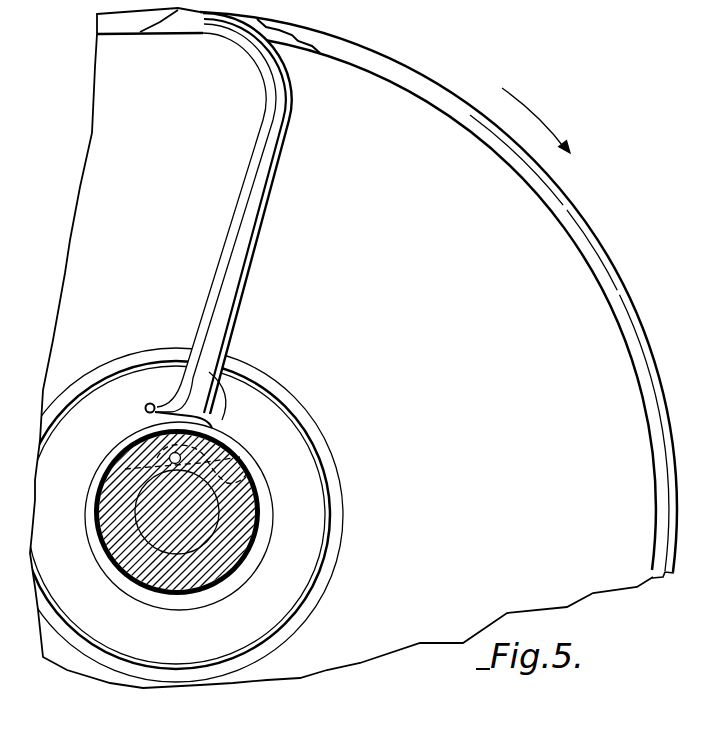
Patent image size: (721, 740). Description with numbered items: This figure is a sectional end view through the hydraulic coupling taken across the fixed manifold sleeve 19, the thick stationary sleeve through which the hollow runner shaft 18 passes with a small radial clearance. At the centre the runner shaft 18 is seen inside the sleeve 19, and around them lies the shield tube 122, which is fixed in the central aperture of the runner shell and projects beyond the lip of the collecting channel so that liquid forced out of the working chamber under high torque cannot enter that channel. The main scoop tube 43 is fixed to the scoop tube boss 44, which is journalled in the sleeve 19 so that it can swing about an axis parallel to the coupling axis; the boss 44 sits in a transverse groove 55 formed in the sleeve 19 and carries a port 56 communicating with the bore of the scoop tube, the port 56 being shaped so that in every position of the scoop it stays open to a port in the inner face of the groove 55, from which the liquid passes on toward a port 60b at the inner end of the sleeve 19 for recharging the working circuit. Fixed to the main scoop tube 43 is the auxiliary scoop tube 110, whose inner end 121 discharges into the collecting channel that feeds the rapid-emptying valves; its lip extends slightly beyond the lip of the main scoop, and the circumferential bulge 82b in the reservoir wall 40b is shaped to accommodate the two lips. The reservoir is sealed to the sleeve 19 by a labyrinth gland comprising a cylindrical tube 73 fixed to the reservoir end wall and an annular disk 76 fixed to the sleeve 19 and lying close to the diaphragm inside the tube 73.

The rim outer flange 82b is at (413, 69).
The reservoir wall 40b is at (535, 194).
The auxiliary scoop tube 110 is at (262, 190).
The scoop tube 43 is at (262, 234).
The inner end 121 is at (148, 404).
The scoop tube boss 44 is at (206, 412).
The cylindrical tube 73 is at (271, 392).
The port 56 is at (207, 452).
The transverse groove 55 is at (240, 457).
The bearing pin 60b is at (138, 443).
The hollow runner shaft 18 is at (200, 507).
The shield tube 122 is at (255, 543).
The annular disk 76 is at (326, 556).
The manifold sleeve 19 is at (240, 587).